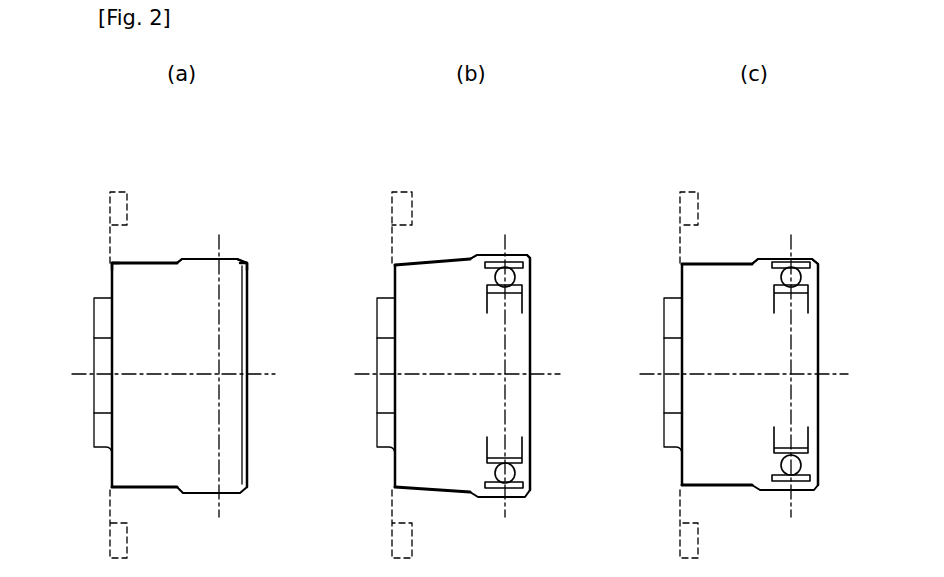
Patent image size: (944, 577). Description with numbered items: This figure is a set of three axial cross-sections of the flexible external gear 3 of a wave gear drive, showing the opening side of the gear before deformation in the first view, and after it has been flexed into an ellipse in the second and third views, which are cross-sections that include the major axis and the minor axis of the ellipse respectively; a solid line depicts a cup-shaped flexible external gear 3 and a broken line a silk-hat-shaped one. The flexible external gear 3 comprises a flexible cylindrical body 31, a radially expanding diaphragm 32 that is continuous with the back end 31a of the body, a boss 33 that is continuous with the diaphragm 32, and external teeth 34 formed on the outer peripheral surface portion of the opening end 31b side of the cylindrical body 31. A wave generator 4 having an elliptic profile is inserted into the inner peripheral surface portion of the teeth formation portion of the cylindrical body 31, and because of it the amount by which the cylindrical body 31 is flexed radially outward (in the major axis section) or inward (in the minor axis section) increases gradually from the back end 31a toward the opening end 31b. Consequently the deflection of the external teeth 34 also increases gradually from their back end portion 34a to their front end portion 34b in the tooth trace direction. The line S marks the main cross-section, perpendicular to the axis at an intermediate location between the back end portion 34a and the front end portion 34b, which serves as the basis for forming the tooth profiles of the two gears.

The flexible external gear 3 is at (153, 228).
The flexible cylindrical body 31 is at (173, 266).
The back end 31a is at (112, 262).
The opening end 31b is at (247, 263).
The diaphragm 32 is at (103, 287).
The boss 33 is at (102, 320).
The external teeth 34 is at (227, 260).
The back end portion 34a is at (178, 262).
The front end portion 34b is at (238, 260).
The wave generator 4 is at (517, 300).
The main cross-section S is at (219, 498).